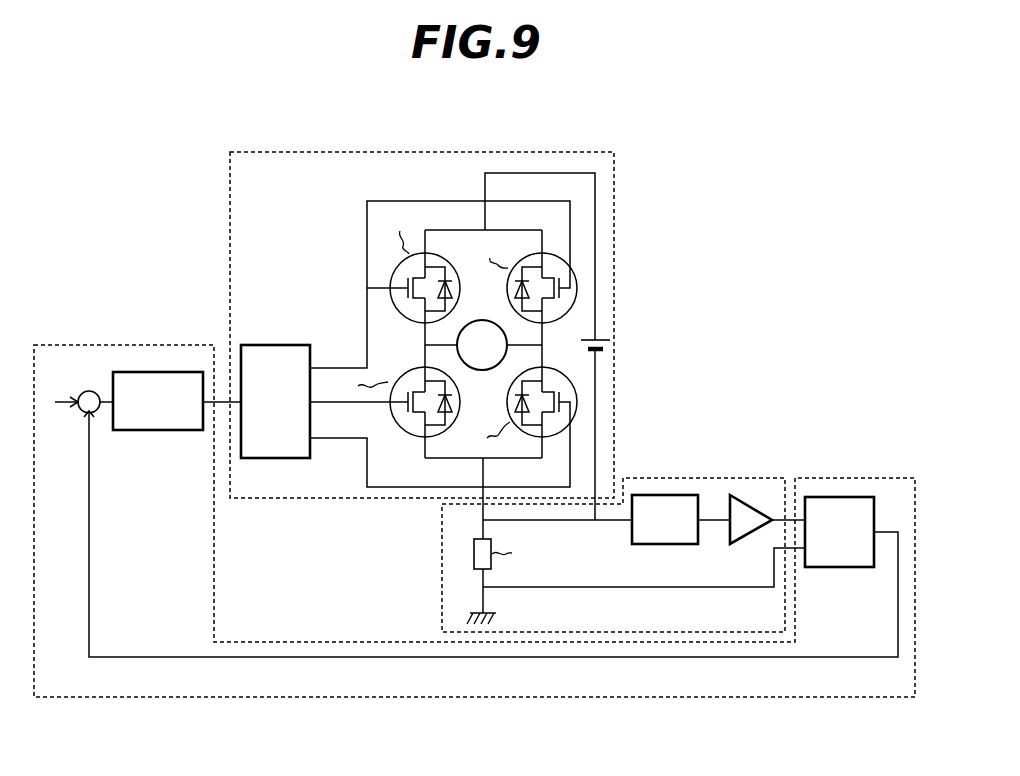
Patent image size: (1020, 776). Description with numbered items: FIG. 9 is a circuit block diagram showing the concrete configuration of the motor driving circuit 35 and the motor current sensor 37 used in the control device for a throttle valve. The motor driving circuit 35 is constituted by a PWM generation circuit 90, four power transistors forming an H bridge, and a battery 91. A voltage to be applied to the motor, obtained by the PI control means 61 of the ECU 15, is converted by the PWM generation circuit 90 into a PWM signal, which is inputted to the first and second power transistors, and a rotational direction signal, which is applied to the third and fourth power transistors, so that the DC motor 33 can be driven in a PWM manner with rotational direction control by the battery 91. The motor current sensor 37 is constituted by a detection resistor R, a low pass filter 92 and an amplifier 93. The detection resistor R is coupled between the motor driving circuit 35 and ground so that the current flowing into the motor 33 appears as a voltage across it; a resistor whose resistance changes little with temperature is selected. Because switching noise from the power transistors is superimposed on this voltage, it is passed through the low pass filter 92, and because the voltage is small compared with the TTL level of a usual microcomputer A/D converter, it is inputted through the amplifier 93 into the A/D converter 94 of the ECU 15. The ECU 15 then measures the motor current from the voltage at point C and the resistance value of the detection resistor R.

The ECU 15 is at (196, 697).
The motor 33 is at (481, 321).
The motor driving circuit 35 is at (230, 187).
The motor current sensor 37 is at (442, 567).
The PI control means 61 is at (156, 431).
The PWM generation circuit 90 is at (278, 344).
The battery 91 is at (613, 343).
The low pass filter 92 is at (663, 494).
The amplifier 93 is at (750, 493).
The A/D converter 94 is at (836, 496).